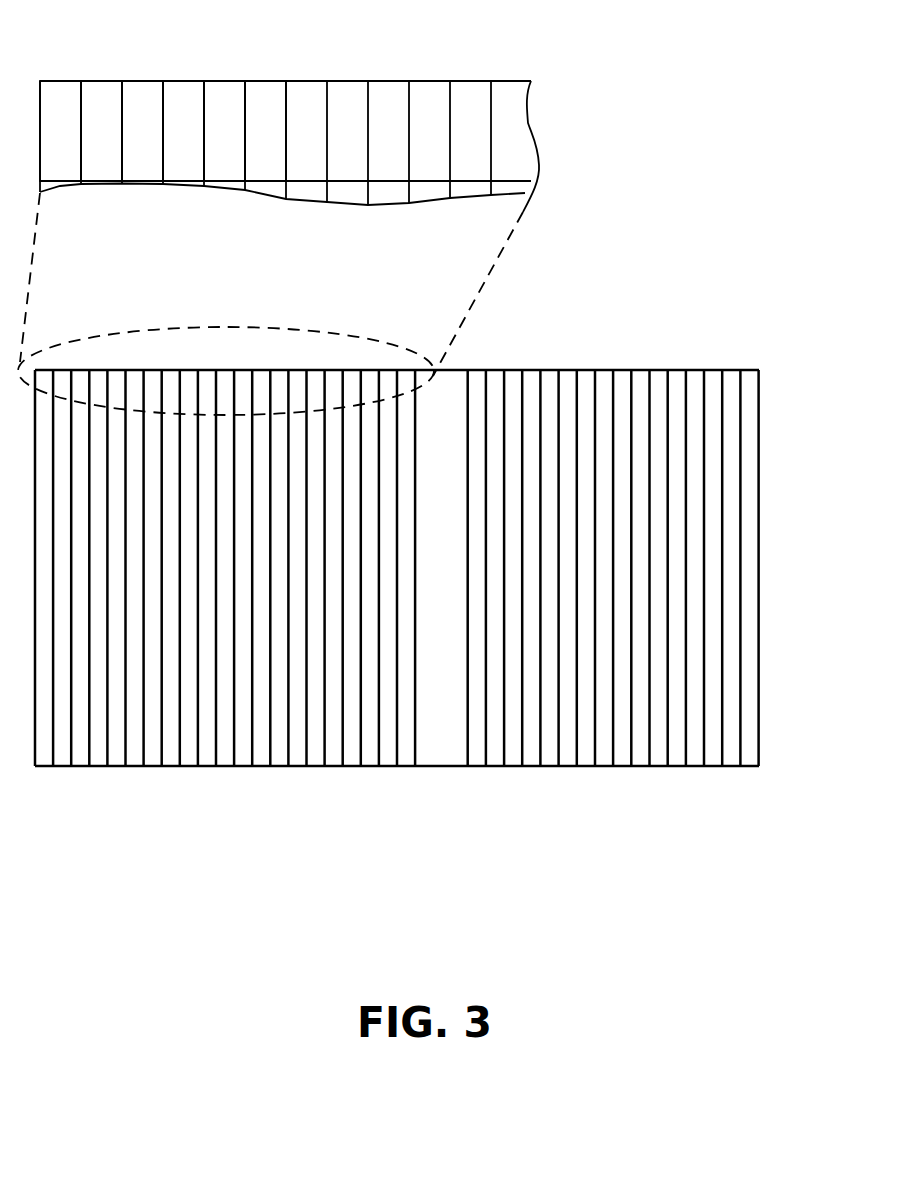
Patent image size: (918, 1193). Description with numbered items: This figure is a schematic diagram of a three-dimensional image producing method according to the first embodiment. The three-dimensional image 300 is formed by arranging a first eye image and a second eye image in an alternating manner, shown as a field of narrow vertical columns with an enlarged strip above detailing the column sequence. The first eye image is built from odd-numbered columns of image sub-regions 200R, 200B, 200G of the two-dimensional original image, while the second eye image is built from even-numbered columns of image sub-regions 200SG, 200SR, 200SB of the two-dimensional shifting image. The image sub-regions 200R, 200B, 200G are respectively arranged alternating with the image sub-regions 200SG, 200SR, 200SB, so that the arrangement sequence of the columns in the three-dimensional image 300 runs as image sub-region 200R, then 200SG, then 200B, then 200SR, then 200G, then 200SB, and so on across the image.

The image sub-region 200R is at (62, 88).
The image sub-region 200SG is at (103, 88).
The image sub-region 200B is at (143, 88).
The image sub-region 200SR is at (185, 88).
The image sub-region 200G is at (225, 88).
The image sub-region 200SB is at (267, 88).
The 3D image 300 is at (786, 540).